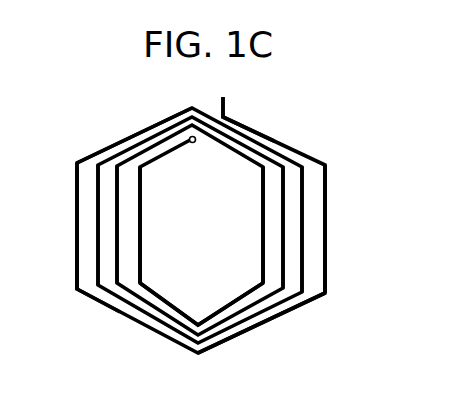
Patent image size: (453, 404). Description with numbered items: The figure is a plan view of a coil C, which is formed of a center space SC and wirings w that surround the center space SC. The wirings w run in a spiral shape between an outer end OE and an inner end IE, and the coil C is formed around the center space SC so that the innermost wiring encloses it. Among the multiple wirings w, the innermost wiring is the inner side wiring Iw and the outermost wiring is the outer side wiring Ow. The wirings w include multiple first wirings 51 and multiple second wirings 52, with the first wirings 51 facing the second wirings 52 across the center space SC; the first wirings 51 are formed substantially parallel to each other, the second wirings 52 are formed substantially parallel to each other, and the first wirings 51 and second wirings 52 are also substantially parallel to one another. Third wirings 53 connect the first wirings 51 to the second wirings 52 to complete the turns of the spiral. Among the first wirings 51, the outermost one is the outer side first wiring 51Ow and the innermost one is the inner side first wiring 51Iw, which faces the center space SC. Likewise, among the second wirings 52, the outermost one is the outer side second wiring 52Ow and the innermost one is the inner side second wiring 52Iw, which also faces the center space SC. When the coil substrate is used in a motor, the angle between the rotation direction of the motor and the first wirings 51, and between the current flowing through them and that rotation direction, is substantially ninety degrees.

The third wirings 53 is at (204, 228).
The first wirings 51 is at (117, 239).
The second wirings 52 is at (288, 254).
The outer side first wiring 51Ow is at (75, 197).
The inner side first wiring 51Iw is at (140, 263).
The outer side second wiring 52Ow is at (325, 260).
The inner side second wiring 52Iw is at (263, 203).
The outer side wiring Ow is at (77, 286).
The inner side wiring Iw is at (140, 227).
The wirings w is at (275, 318).
The coil C is at (122, 138).
The outer end OE is at (225, 110).
The inner end IE is at (192, 143).
The center space SC is at (185, 308).